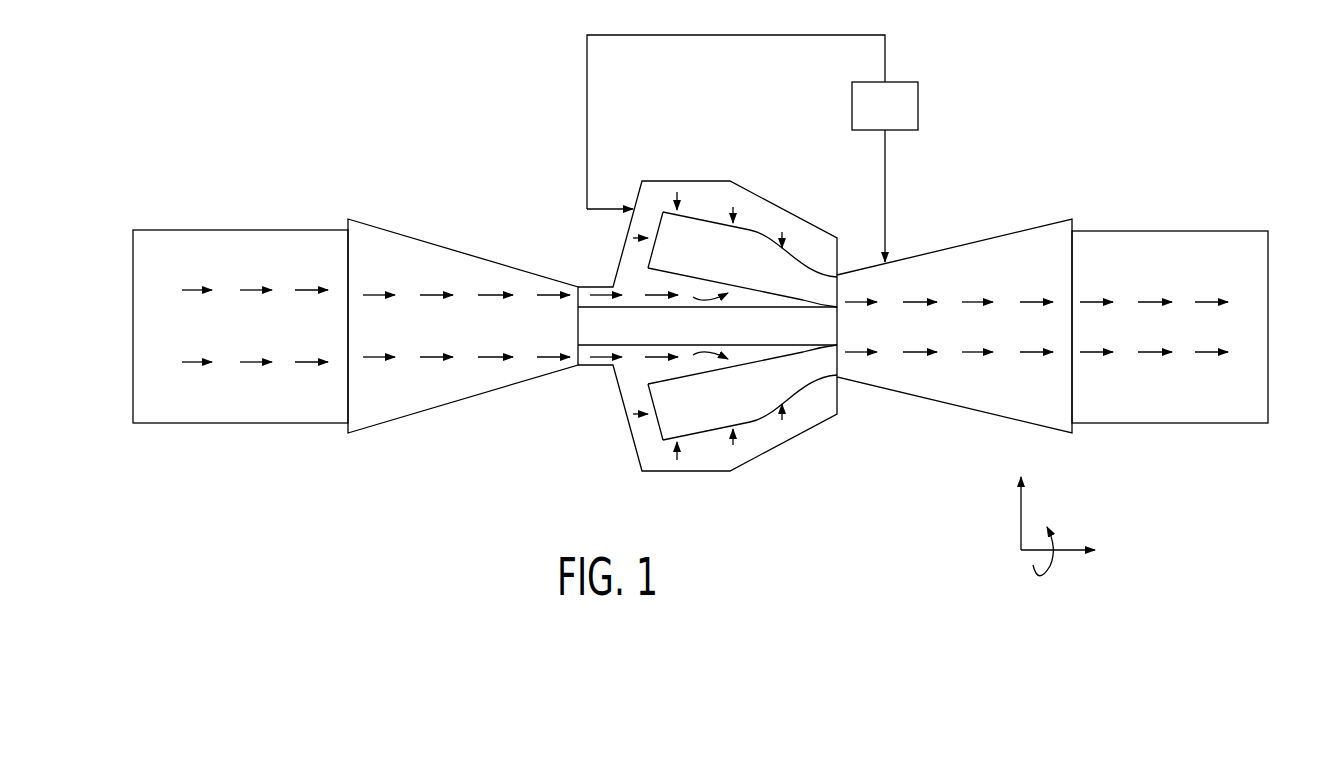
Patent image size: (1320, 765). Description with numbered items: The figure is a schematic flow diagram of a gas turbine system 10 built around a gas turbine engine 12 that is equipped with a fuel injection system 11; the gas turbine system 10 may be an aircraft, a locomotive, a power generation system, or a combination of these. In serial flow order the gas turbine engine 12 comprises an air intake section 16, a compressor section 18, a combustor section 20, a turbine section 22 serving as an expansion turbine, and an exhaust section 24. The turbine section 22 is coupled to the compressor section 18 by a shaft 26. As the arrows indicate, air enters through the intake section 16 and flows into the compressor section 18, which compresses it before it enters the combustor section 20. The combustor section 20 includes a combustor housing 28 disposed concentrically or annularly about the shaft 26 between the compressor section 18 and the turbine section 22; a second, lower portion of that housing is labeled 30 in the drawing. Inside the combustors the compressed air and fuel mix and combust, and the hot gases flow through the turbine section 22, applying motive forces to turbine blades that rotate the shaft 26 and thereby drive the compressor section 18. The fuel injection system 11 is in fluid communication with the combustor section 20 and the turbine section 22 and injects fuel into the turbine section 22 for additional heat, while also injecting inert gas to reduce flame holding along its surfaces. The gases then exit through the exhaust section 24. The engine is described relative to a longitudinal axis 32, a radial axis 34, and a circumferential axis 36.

The gas turbine system 10 is at (1013, 48).
The fuel injection system 11 is at (896, 119).
The gas turbine engine 12 is at (707, 137).
The air intake section 16 is at (204, 230).
The compressor section 18 is at (465, 253).
The combustor section 20 is at (807, 217).
The turbine section 22 is at (945, 248).
The exhaust section 24 is at (1197, 231).
The shaft 26 is at (797, 339).
The combustor housing 28 is at (740, 183).
The combustion liner 30 is at (702, 432).
The longitudinal axis 32 is at (1067, 552).
The radial axis 34 is at (1021, 517).
The circumferential axis 36 is at (1043, 577).